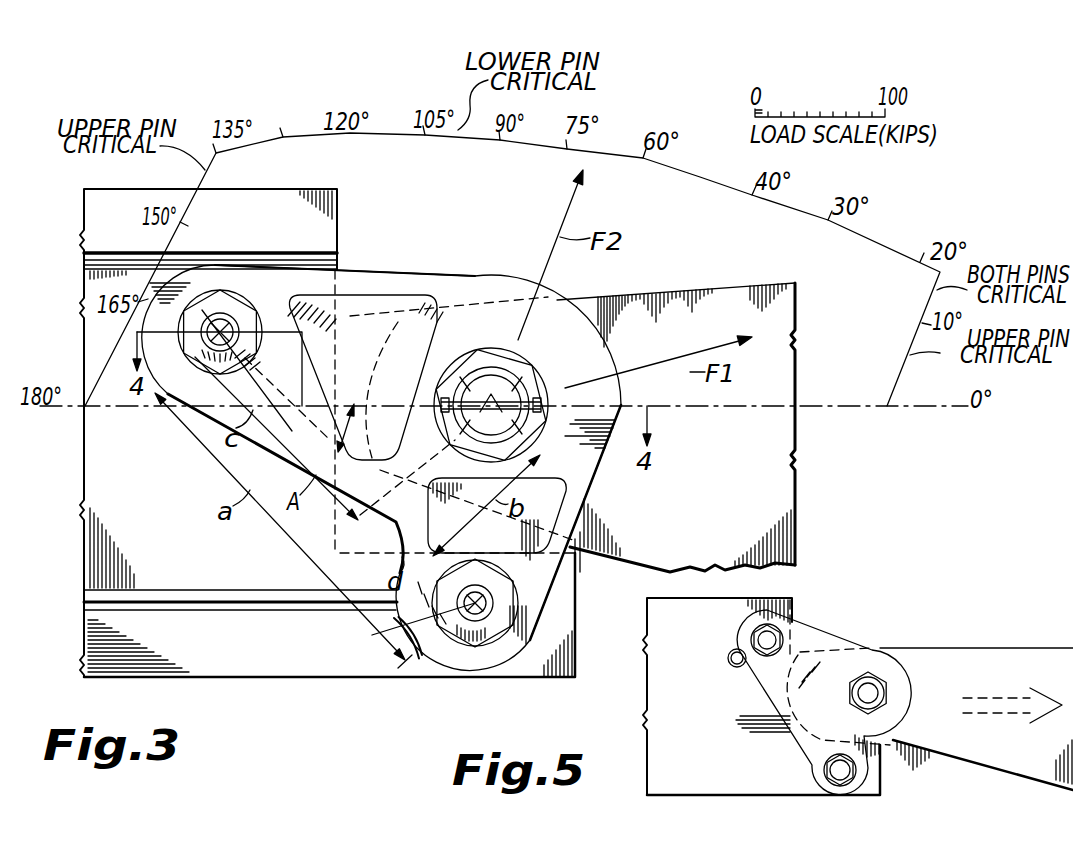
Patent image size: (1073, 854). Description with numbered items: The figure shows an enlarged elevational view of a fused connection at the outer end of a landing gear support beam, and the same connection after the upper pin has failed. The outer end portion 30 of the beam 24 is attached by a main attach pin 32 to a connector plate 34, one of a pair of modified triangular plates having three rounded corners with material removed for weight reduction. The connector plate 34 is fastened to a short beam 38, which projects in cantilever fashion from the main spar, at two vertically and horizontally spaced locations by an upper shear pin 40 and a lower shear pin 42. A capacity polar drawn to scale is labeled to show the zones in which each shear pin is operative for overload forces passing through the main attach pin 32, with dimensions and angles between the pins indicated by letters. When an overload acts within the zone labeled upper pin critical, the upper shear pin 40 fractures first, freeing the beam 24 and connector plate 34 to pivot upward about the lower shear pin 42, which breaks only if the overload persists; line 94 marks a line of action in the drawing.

In FIG. 3, the beam 24 is at (792, 455).
In FIG. 5, the beam 24 is at (980, 648).
In FIG. 3, the outer end portion 30 is at (345, 512).
In FIG. 3, the main attach pin 32 is at (527, 374).
In FIG. 5, the main attach pin 32 is at (868, 680).
In FIG. 3, the connector plate 34 is at (312, 446).
In FIG. 5, the connector plate 34 is at (823, 636).
In FIG. 3, the short beam 38 is at (237, 663).
In FIG. 5, the short beam 38 is at (717, 757).
In FIG. 5, the upper shear pin 40 is at (727, 660).
In FIG. 3, the lower shear pin 42 is at (400, 640).
In FIG. 5, the lower shear pin 42 is at (843, 770).
In FIG. 3, the line of action 94 is at (172, 412).